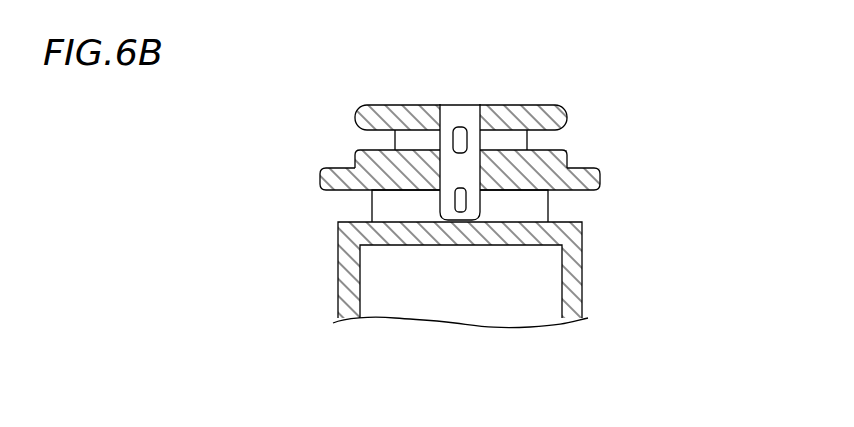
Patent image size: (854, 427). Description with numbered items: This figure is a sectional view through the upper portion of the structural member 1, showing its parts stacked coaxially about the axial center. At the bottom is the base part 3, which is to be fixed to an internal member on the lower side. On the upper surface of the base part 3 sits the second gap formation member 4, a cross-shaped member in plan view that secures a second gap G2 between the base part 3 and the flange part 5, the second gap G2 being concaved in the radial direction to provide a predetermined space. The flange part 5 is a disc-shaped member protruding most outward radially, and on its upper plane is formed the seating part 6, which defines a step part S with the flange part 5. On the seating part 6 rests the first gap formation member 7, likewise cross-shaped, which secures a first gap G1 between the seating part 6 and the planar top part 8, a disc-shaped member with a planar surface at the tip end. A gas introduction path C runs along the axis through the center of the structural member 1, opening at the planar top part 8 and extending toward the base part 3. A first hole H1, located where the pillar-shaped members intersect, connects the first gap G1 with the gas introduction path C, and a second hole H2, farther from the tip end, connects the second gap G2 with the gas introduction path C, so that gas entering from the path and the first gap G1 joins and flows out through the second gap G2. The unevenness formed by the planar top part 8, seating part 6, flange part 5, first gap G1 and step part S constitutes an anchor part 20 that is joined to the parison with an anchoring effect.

The structural member 1 is at (576, 71).
The base part 3 is at (582, 268).
The second gap formation member 4 is at (372, 205).
The flange part 5 is at (325, 173).
The seating part 6 is at (356, 160).
The first gap formation member 7 is at (393, 140).
The planar top part 8 is at (362, 105).
The anchor part 20 is at (400, 151).
The first hole H1 is at (456, 128).
The second hole H2 is at (462, 212).
The gas introduction path C is at (472, 128).
The step part S is at (568, 160).
The first gap G1 is at (537, 137).
The second gap G2 is at (560, 205).